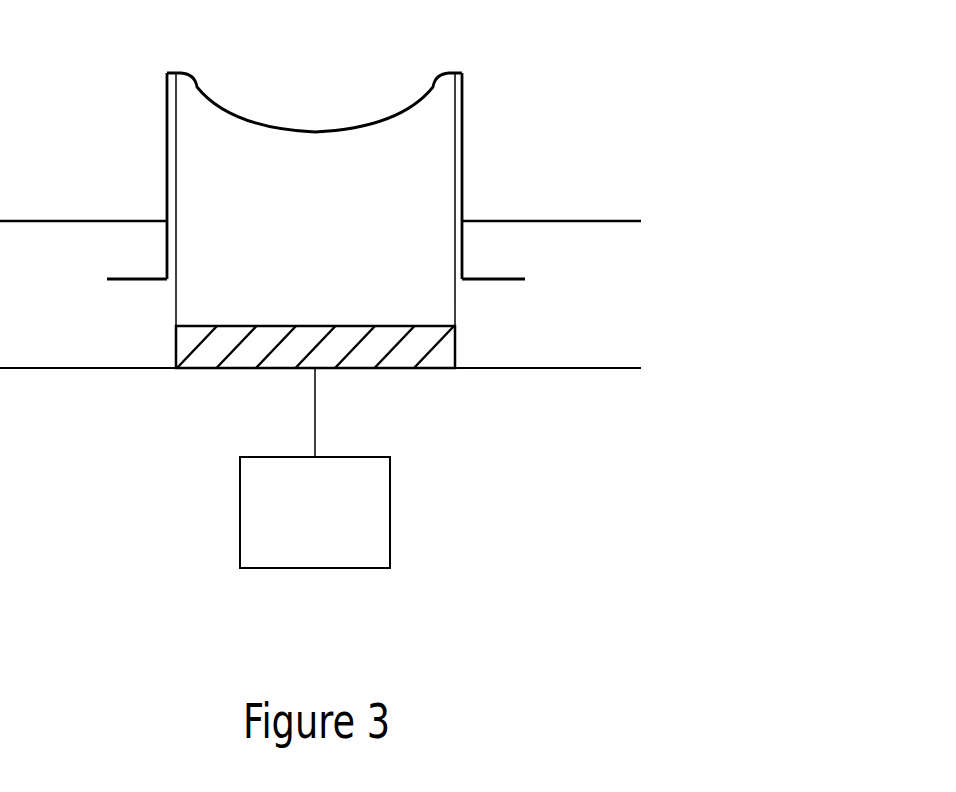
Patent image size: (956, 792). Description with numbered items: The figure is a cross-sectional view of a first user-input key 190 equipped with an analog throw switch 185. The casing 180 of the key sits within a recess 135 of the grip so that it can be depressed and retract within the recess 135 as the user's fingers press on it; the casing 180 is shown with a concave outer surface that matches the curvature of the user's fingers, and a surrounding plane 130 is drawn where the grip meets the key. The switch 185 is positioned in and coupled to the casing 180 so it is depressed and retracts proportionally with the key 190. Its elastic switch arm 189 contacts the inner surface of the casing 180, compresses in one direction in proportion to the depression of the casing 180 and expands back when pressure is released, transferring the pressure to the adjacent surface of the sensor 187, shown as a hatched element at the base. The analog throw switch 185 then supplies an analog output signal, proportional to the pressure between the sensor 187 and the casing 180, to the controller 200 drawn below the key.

The upper plate / chamber wall line 130 is at (557, 221).
The recess 135 is at (558, 286).
The casing 180 is at (462, 105).
The analog throw switch 185 is at (472, 311).
The sensor 187 is at (212, 347).
The elastic switch arm 189 is at (455, 155).
The first user-input key 190 is at (319, 74).
The controller 200 is at (295, 544).